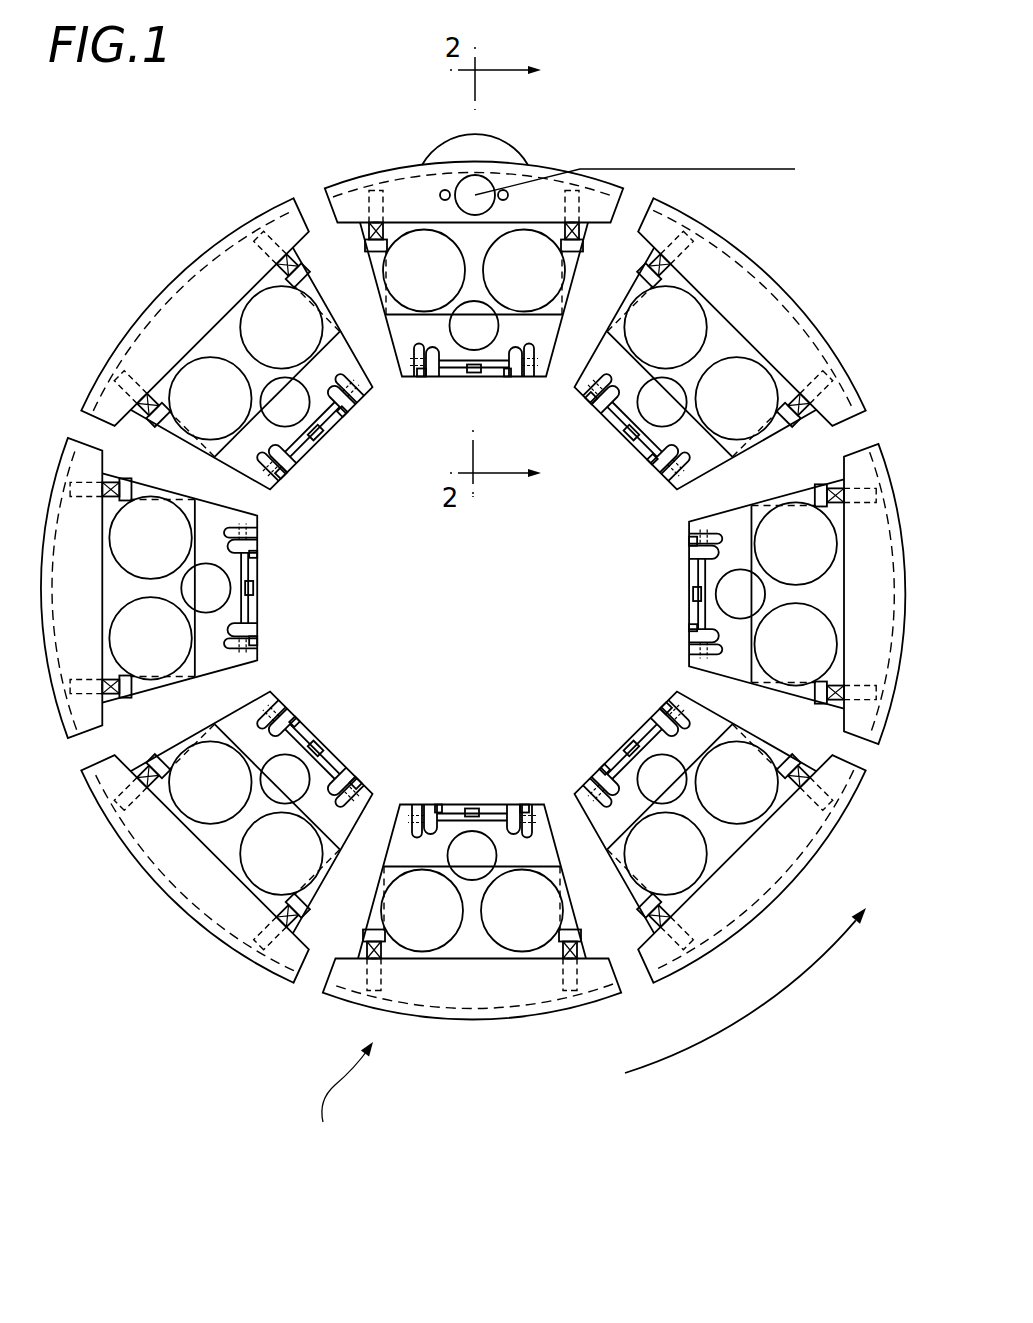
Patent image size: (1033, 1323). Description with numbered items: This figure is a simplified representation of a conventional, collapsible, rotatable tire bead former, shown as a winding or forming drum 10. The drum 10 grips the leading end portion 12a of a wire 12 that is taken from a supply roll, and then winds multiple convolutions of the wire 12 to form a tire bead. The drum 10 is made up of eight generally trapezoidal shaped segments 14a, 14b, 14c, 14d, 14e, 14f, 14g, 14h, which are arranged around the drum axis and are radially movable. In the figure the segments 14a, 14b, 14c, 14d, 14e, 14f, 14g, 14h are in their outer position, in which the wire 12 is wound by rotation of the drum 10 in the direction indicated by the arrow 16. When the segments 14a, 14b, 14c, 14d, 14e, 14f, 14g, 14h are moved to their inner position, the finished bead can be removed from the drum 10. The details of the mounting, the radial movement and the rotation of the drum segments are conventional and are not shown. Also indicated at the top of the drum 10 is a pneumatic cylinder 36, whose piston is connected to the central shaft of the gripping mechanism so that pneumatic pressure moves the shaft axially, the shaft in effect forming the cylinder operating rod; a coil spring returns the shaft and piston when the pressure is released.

The winding or forming drum 10 is at (340, 1097).
The wire 12 is at (688, 168).
The leading end portion 12a is at (528, 182).
The segment 14a is at (445, 378).
The segment 14b is at (628, 453).
The segment 14c is at (686, 620).
The segment 14d is at (640, 722).
The segment 14e is at (462, 801).
The segment 14f is at (310, 717).
The segment 14g is at (262, 603).
The segment 14h is at (307, 457).
The arrow 16 is at (720, 1034).
The pneumatic cylinder 36 is at (508, 143).